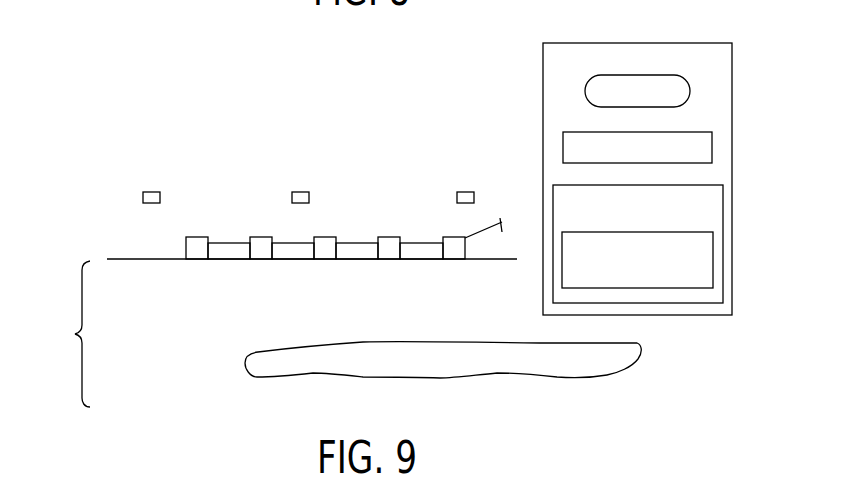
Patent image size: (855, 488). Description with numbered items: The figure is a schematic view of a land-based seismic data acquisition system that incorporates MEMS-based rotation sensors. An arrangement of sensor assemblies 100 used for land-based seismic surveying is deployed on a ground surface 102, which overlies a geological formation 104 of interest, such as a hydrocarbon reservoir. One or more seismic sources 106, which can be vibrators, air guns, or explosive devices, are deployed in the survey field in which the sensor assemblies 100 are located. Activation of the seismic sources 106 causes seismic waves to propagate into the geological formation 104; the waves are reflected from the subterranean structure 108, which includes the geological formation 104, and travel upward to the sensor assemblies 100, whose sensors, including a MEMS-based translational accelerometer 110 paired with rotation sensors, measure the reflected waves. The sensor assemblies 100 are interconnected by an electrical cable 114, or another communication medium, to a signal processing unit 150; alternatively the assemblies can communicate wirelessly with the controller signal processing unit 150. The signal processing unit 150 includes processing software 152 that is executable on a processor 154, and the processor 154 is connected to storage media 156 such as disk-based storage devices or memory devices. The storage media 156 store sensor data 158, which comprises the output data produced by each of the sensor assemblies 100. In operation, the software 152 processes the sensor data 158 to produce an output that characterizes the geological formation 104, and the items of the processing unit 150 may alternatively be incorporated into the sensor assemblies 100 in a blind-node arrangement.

The sensor assemblies 100 is at (195, 236).
The ground surface 102 is at (507, 259).
The geological formation 104 is at (447, 368).
The seismic sources 106 is at (152, 190).
The subterranean structure 108 is at (67, 334).
The MEMS-based translational accelerometer 110 is at (482, 231).
The electrical cable 114 is at (230, 245).
The signal processing unit 150 is at (710, 43).
The processing software 152 is at (690, 90).
The processor 154 is at (712, 147).
The storage media 156 is at (723, 200).
The sensor data 158 is at (713, 260).